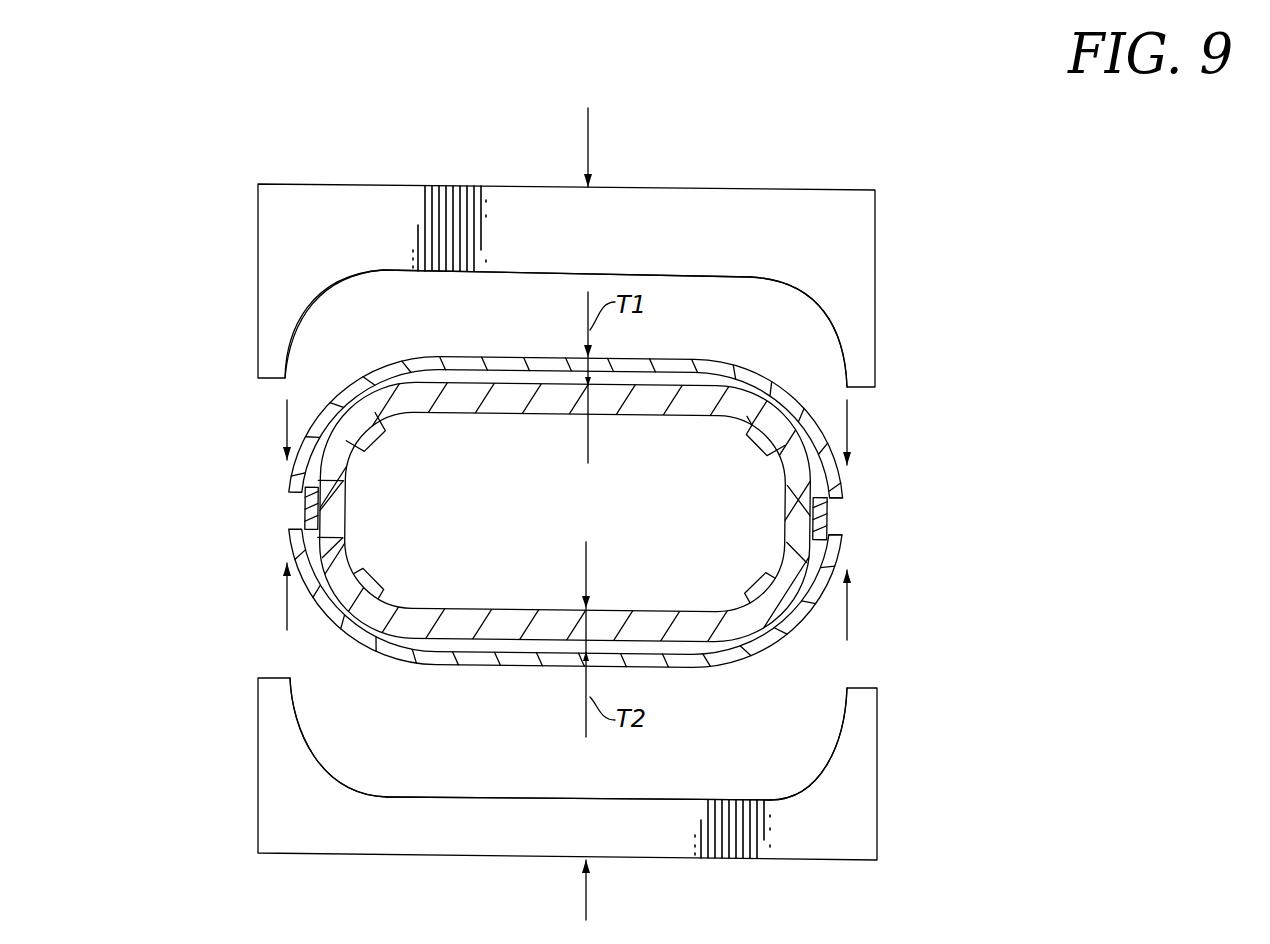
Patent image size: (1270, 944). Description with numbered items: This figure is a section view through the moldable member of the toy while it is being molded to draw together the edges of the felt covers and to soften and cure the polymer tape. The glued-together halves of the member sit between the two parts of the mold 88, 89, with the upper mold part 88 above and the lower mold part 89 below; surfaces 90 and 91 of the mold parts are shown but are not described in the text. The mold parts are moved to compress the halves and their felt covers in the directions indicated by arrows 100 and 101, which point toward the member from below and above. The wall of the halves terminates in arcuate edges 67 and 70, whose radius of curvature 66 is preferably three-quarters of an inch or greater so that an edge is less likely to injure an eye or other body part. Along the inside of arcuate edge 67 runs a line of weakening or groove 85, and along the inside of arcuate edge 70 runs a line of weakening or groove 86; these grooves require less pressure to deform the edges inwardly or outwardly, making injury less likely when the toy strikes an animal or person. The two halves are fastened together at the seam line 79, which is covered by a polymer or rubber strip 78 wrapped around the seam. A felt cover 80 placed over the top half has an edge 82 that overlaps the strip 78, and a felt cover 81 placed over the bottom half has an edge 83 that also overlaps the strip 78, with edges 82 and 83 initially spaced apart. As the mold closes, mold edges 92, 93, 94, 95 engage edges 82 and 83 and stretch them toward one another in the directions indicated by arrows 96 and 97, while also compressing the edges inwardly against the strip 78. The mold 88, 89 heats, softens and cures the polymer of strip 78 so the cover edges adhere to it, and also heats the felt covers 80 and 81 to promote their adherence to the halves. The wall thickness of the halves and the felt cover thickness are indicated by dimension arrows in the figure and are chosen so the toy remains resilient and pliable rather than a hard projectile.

The radius of curvature 66 is at (370, 441).
The arcuate edge 67 is at (770, 470).
The arcuate edge 70 is at (384, 558).
The polymer strip 78 is at (304, 505).
The seam line 79 is at (362, 517).
The felt cover 80 is at (510, 343).
The felt cover 81 is at (536, 671).
The edge of felt cover 82 is at (843, 500).
The edge of felt cover 83 is at (839, 528).
The line of weakening 85 is at (372, 457).
The line of weakening 86 is at (354, 584).
The mold part 88 is at (902, 272).
The mold part 89 is at (900, 786).
The upper die pressing surface 90 is at (747, 275).
The lower die pressing surface 91 is at (520, 803).
The mold edge 92 is at (291, 677).
The mold edge 93 is at (316, 368).
The mold edge 94 is at (792, 325).
The mold edge 95 is at (847, 690).
The arrow 96 is at (284, 600).
The arrow 97 is at (849, 625).
The arrow 100 is at (592, 905).
The arrow 101 is at (590, 137).